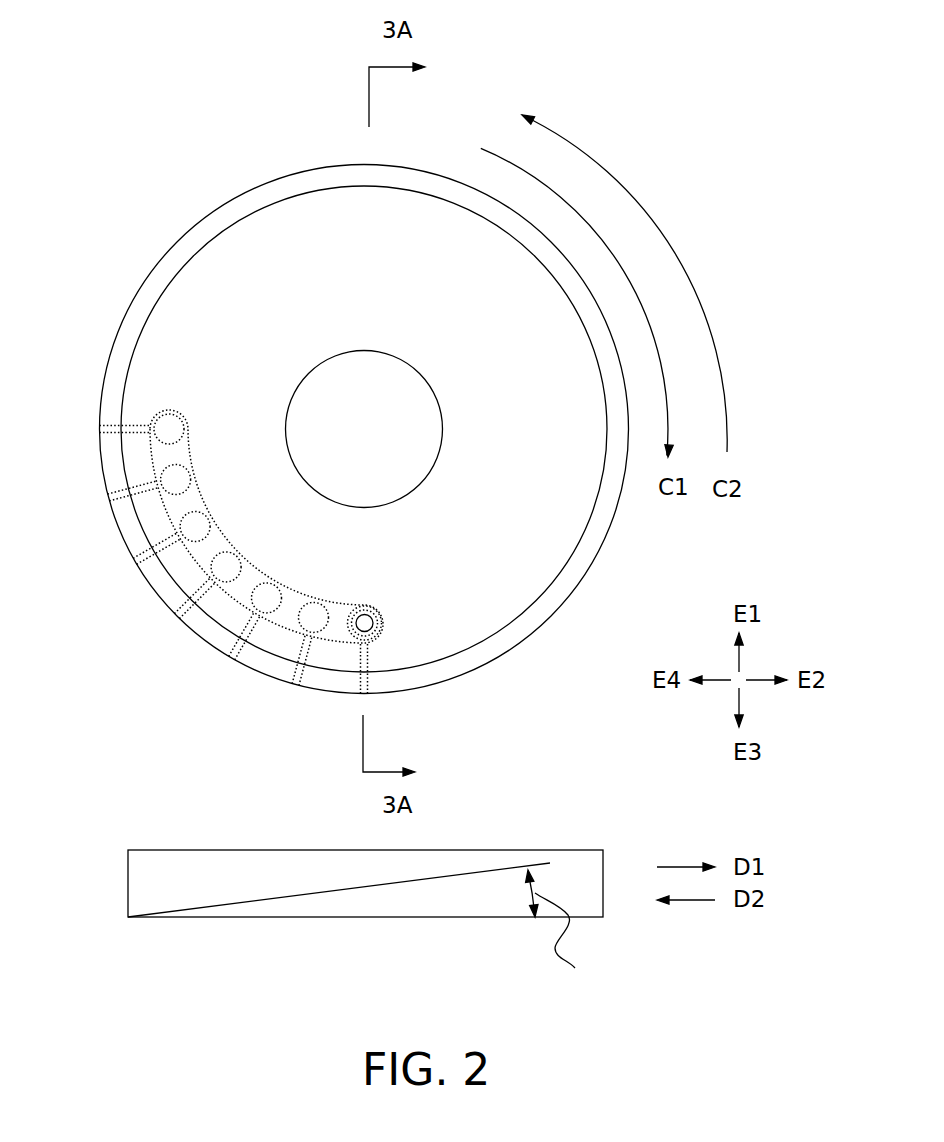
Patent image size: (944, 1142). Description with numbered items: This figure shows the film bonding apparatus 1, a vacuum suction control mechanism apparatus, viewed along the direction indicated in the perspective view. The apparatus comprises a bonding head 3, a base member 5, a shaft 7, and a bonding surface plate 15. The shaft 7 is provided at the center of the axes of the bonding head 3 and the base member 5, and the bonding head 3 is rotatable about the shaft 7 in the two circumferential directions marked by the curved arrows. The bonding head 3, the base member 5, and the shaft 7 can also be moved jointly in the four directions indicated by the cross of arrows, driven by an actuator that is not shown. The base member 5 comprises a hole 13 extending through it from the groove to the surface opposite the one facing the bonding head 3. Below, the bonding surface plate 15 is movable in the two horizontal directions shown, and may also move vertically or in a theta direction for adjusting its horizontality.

The film bonding apparatus 1 is at (370, 416).
The bonding head 3 is at (607, 505).
The base member 5 is at (467, 617).
The shaft 7 is at (392, 480).
The hole 13 is at (365, 625).
The bonding surface plate 15 is at (577, 865).